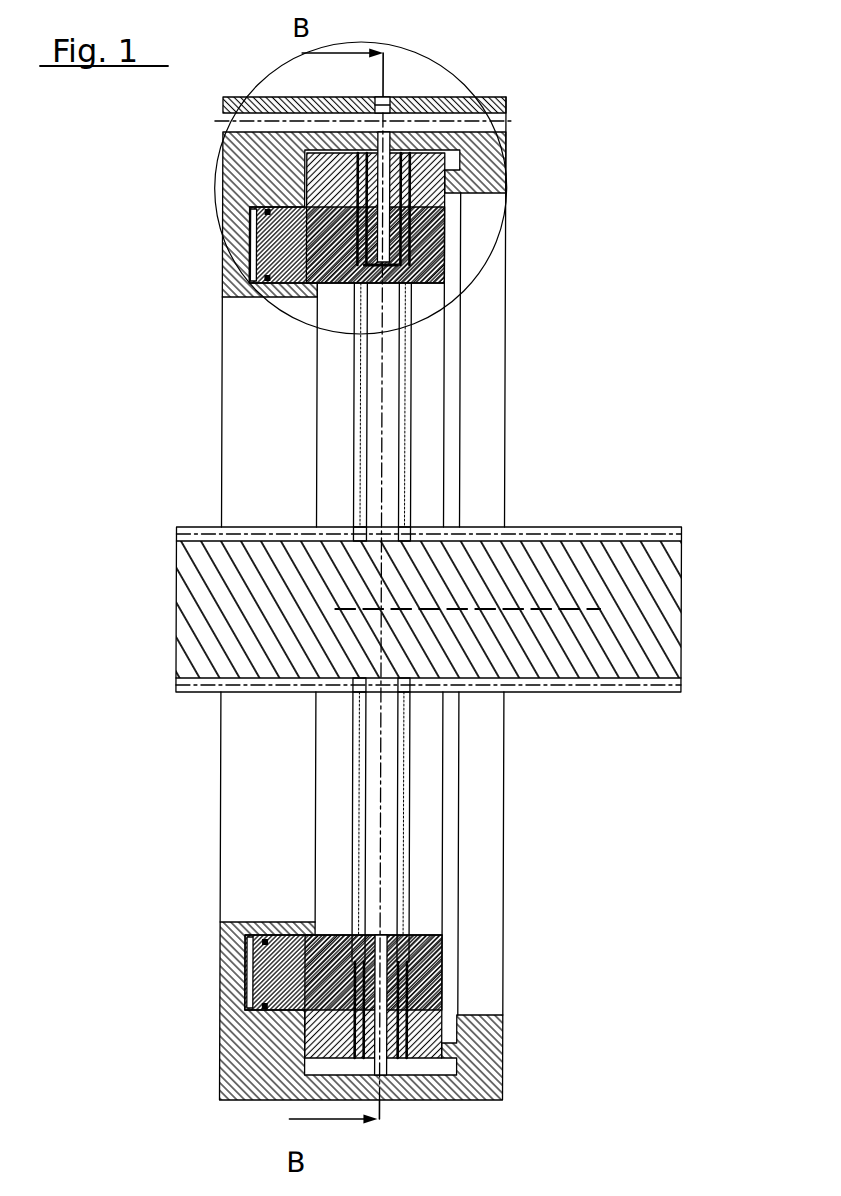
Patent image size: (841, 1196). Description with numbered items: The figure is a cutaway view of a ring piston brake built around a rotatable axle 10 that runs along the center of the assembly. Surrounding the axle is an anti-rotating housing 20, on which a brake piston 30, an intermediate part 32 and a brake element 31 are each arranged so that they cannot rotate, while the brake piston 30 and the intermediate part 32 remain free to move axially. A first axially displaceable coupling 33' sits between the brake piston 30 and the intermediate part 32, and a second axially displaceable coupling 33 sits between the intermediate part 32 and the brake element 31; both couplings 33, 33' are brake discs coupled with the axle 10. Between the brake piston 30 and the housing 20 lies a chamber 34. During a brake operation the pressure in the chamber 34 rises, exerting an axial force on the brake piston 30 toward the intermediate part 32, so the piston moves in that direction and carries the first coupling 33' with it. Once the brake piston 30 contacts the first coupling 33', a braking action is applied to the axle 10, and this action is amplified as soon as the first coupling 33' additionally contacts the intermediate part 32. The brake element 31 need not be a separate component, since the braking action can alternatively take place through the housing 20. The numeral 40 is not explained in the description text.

The rotatable axle 10 is at (446, 544).
The anti-rotating housing 20 is at (445, 598).
The brake piston 30 is at (252, 608).
The brake element 31 is at (511, 604).
The intermediate part 32 is at (484, 605).
The second axially displaceable coupling 33 is at (507, 605).
The first axially displaceable coupling 33' is at (251, 605).
The chamber 34 is at (148, 608).
The central screw channel 40 is at (383, 193).